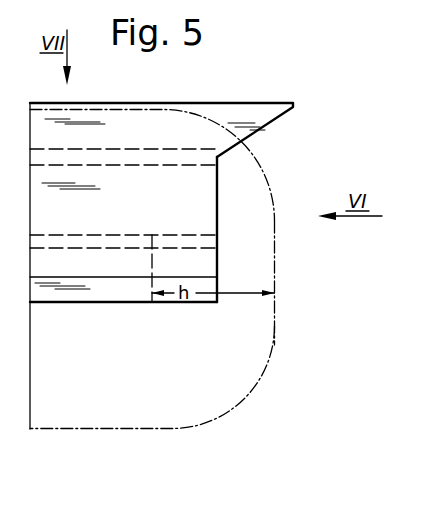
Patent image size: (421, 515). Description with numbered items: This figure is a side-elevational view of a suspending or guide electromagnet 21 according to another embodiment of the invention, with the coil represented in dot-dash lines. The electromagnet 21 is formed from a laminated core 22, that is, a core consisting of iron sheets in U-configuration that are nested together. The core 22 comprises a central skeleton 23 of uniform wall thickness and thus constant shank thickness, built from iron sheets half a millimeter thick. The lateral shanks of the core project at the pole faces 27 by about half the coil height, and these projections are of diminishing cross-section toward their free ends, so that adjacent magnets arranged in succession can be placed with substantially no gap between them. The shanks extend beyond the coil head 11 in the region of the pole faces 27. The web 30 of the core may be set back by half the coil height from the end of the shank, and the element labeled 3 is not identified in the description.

The pole faces 27 is at (258, 103).
The central skeleton 23 is at (213, 203).
The laminated core 22 is at (224, 262).
The web 30 is at (120, 270).
The coil head 11 is at (268, 320).
The roll outline 3 is at (256, 368).
The suspending or guide electromagnet 21 is at (210, 430).